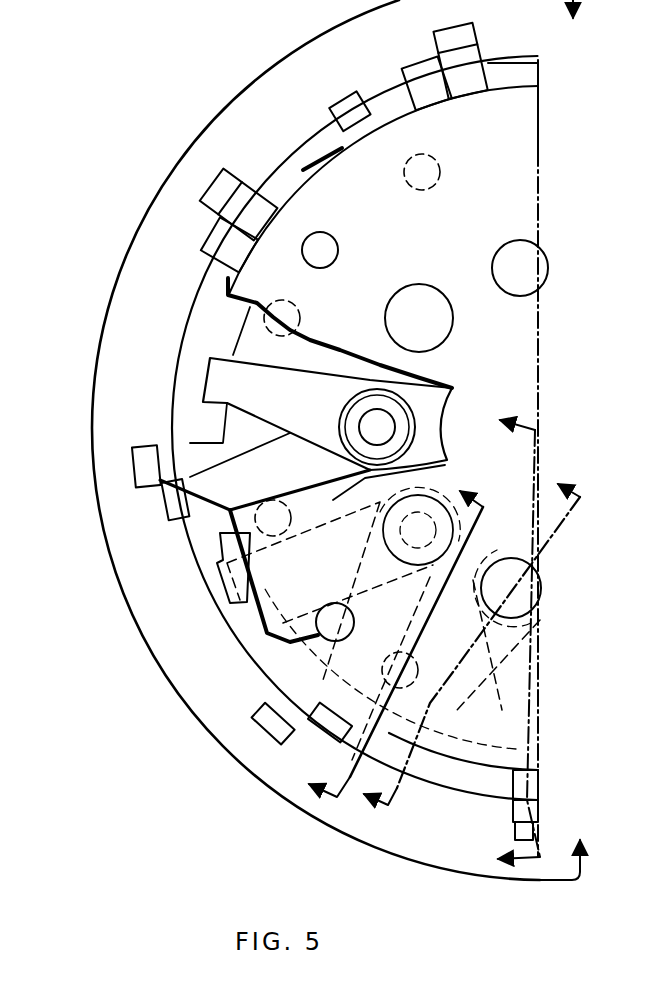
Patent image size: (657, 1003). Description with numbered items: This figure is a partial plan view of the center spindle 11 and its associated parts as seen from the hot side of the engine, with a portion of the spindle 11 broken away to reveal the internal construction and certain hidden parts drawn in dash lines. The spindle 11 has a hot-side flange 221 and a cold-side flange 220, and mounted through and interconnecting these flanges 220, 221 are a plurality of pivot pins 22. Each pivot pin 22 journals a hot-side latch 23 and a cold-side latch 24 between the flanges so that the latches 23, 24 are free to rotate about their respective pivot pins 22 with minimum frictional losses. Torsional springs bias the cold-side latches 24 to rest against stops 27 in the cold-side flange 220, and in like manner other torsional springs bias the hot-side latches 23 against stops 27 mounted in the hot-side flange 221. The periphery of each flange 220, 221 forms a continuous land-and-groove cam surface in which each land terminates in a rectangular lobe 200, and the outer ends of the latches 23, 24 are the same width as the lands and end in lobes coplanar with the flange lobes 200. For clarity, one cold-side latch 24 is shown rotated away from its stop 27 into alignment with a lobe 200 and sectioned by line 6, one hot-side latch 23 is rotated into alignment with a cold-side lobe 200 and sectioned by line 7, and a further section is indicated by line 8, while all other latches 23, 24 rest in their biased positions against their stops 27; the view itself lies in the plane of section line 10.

The section line 6— 6 is at (507, 635).
The section line 7— 7 is at (465, 630).
The section line 8— 8 is at (382, 632).
The section line 10- 10 is at (565, 440).
The spindle 11 is at (510, 161).
The pivot pin 22 is at (386, 315).
The hot-side latch 23 is at (205, 380).
The cold-side latch 24 is at (412, 65).
The stop 27 is at (316, 233).
The lobe 200 is at (330, 123).
The cold-side flange 220 is at (478, 797).
The hot-side flange 221 is at (448, 772).